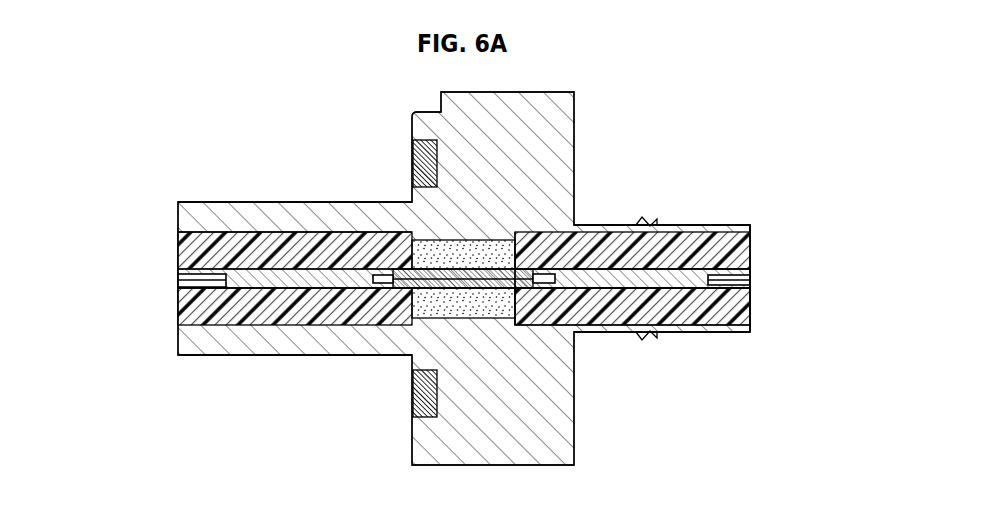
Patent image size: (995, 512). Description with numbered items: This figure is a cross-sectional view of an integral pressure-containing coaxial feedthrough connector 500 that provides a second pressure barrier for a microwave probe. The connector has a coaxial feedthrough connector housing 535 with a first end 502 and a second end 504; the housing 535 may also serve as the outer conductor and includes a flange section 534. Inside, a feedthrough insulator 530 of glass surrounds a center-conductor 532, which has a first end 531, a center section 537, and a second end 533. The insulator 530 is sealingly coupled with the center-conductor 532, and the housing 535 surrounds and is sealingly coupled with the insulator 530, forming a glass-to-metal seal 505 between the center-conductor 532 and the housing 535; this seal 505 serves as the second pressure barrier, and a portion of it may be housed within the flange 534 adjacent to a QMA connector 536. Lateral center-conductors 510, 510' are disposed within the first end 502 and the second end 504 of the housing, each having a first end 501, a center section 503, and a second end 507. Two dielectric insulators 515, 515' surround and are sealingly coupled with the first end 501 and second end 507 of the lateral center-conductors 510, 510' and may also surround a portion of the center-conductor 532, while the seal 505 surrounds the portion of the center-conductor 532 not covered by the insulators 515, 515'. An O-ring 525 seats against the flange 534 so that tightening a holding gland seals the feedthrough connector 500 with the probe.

The coaxial feedthrough connector 500 is at (280, 120).
The first end of lateral center-conductor 501 is at (190, 293).
The first end of housing 502 is at (232, 374).
The center section of lateral center-conductor 503 is at (304, 275).
The second end of housing 504 is at (716, 343).
The glass-to-metal seal 505 is at (403, 251).
The second end of lateral center-conductor 507 is at (405, 288).
The lateral center-conductor 510 is at (464, 218).
The lateral center-conductor 510' is at (632, 327).
The dielectric insulator 515 is at (464, 237).
The dielectric insulator 515' is at (632, 337).
The O-ring 525 is at (410, 152).
The feedthrough insulator 530 is at (478, 243).
The first end of center-conductor 531 is at (397, 283).
The center-conductor 532 is at (492, 290).
The second end of center-conductor 533 is at (532, 268).
The flange section 534 is at (518, 155).
The coaxial feedthrough connector housing 535 is at (370, 232).
The QMA connector 536 is at (725, 220).
The center section of center-conductor 537 is at (457, 290).